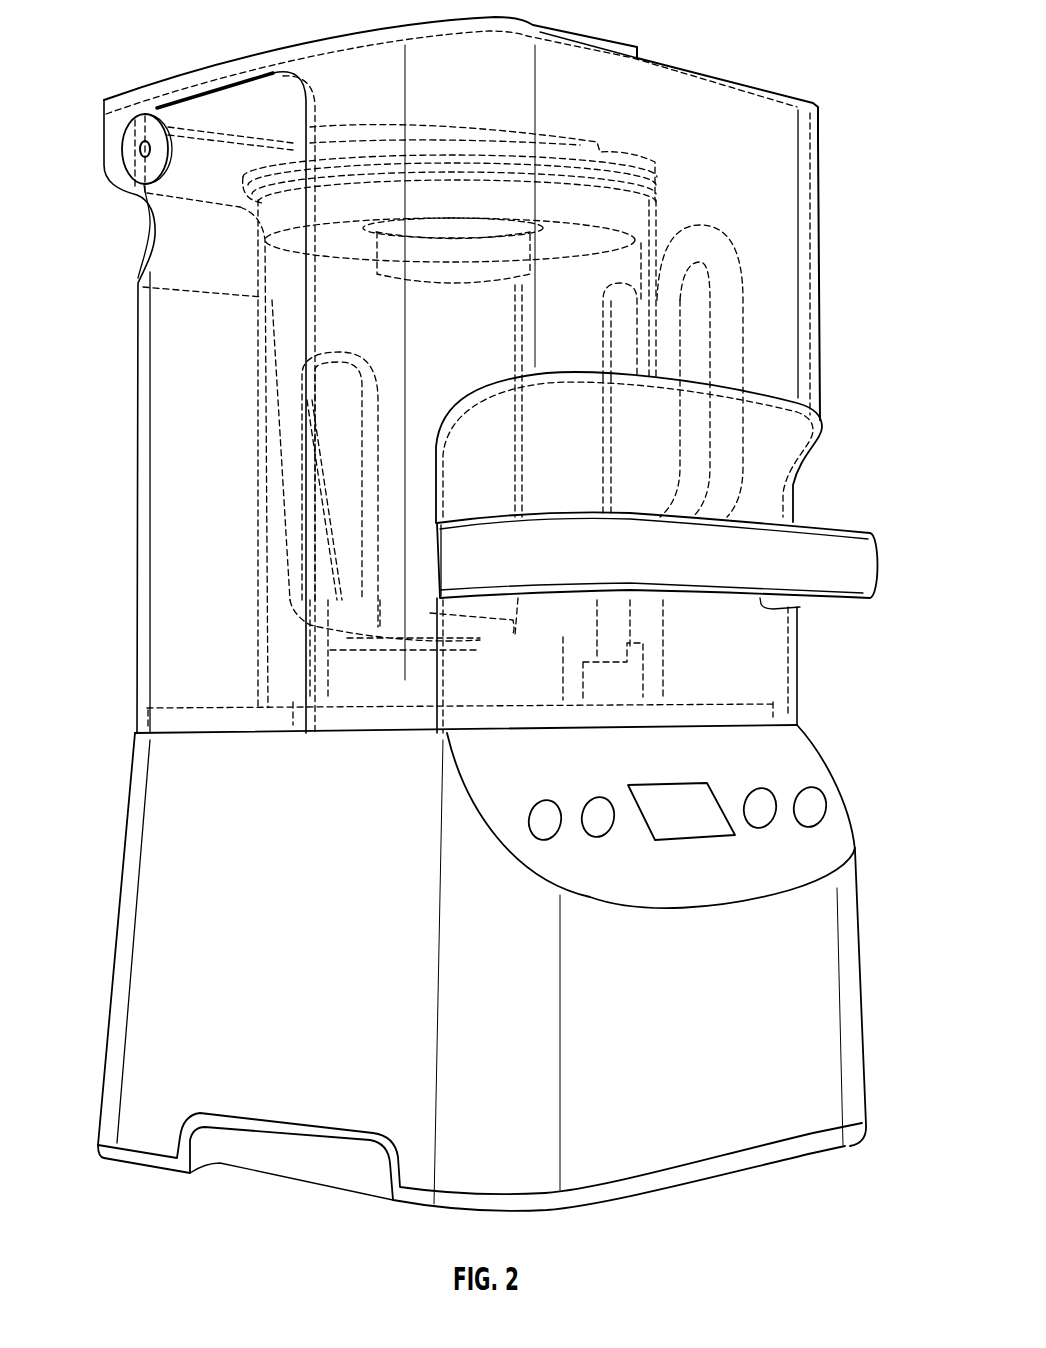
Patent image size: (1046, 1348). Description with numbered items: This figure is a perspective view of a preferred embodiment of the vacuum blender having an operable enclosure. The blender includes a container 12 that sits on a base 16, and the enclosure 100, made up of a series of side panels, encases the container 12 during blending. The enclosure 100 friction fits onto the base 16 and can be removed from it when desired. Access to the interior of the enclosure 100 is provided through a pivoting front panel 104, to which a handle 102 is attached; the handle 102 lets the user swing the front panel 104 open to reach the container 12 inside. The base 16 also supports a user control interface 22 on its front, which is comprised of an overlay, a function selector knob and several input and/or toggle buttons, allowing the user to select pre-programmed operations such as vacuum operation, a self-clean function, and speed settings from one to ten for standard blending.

The container 12 is at (388, 342).
The base 16 is at (265, 897).
The user control interface 22 is at (793, 770).
The enclosure 100 is at (185, 385).
The handle 102 is at (838, 574).
The pivoting front panel 104 is at (770, 287).